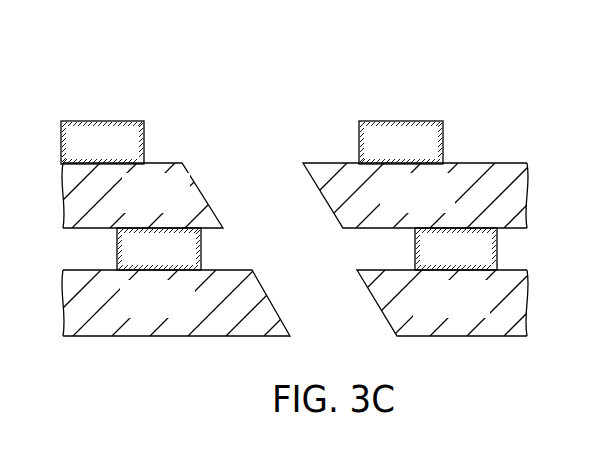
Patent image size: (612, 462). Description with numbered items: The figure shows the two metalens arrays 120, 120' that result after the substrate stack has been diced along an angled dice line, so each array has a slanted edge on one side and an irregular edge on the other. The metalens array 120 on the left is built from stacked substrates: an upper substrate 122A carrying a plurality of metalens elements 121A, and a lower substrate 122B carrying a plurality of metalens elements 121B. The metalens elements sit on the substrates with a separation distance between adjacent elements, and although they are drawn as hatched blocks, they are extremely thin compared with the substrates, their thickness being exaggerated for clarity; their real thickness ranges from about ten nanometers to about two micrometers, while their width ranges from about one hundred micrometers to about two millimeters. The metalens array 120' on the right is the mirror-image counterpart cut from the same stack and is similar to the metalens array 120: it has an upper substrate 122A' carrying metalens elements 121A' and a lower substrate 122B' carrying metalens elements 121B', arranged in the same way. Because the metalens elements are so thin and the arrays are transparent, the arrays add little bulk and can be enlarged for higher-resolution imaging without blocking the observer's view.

The metalens array 120 is at (182, 178).
The metalens elements 121A is at (102, 142).
The substrate 122A is at (161, 195).
The metalens elements 121B is at (159, 249).
The substrate 122B is at (182, 303).
The metalens array 120' is at (426, 178).
The first spacer element (mirrored) 121A' is at (401, 142).
The first structural member (mirrored) 122A' is at (425, 195).
The second spacer element (mirrored) 121B' is at (456, 249).
The second structural member (mirrored) 122B' is at (444, 303).